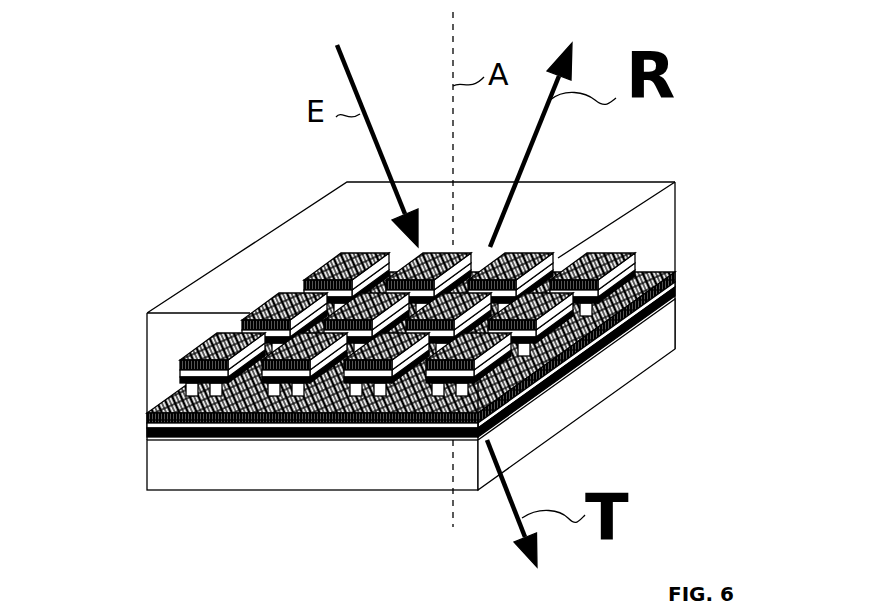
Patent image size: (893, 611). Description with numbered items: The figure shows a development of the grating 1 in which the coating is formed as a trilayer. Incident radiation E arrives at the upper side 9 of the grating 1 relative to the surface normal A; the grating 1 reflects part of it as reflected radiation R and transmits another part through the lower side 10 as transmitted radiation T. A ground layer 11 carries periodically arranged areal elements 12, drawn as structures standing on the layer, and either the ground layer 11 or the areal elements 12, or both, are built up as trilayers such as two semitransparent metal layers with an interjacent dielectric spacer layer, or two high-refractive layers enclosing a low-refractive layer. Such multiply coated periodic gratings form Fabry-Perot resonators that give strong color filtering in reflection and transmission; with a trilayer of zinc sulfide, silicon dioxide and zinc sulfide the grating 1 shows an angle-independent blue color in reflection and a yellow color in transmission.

The grating 1 is at (186, 240).
The upper side 9 is at (643, 188).
The lower side 10 is at (391, 490).
The ground layer 11 is at (727, 300).
The areal elements 12 is at (163, 375).